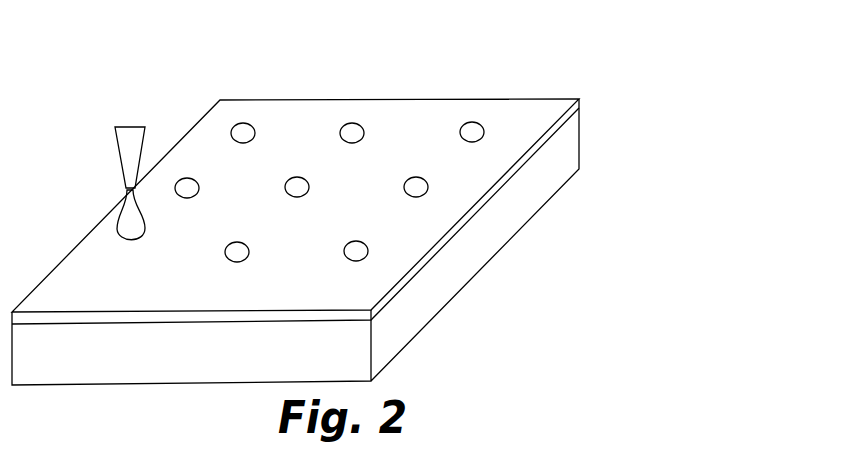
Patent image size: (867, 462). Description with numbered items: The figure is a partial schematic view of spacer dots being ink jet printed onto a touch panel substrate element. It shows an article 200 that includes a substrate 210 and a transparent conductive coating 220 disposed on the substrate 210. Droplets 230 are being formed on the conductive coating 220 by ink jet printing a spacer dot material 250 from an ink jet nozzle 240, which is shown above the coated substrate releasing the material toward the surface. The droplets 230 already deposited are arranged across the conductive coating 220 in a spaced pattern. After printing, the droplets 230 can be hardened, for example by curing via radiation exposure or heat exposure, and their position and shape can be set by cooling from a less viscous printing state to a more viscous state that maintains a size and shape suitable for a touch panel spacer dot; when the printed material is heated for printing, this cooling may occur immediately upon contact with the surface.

The article 200 is at (361, 203).
The substrate 210 is at (540, 185).
The transparent conductive coating 220 is at (558, 125).
The droplets 230 is at (244, 132).
The ink jet nozzle 240 is at (125, 132).
The spacer dot material 250 is at (127, 225).